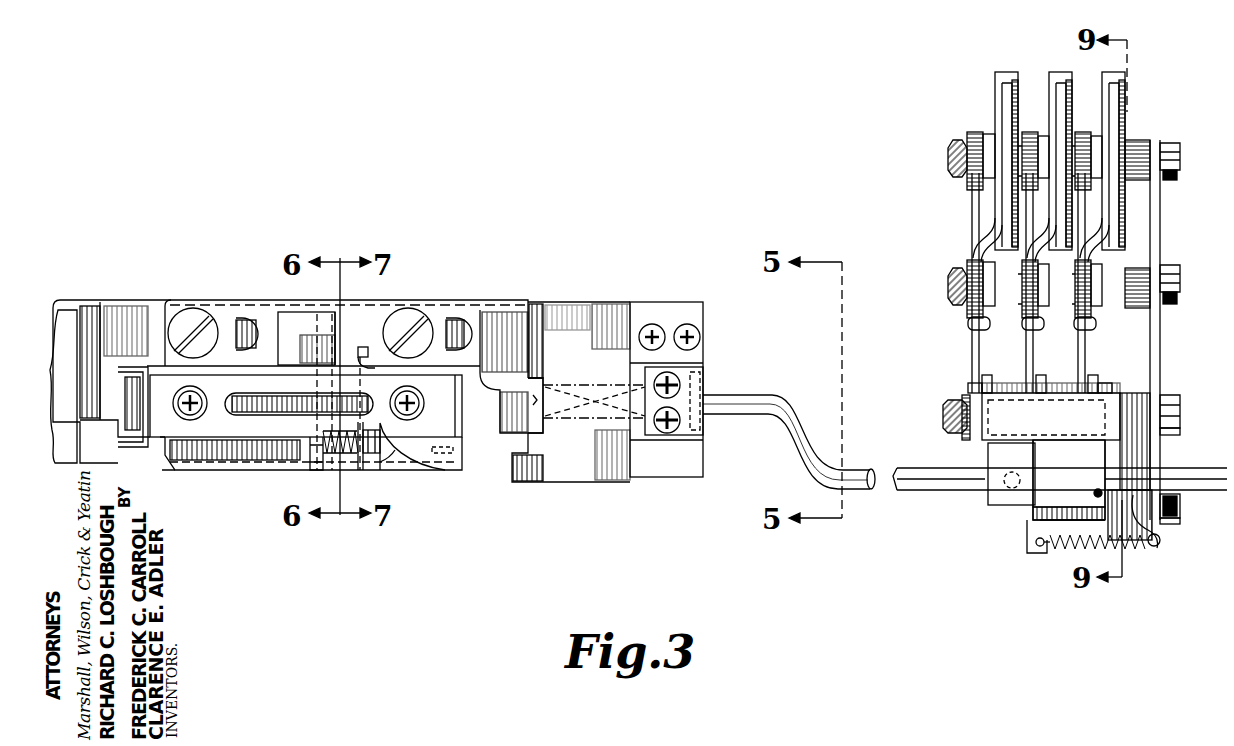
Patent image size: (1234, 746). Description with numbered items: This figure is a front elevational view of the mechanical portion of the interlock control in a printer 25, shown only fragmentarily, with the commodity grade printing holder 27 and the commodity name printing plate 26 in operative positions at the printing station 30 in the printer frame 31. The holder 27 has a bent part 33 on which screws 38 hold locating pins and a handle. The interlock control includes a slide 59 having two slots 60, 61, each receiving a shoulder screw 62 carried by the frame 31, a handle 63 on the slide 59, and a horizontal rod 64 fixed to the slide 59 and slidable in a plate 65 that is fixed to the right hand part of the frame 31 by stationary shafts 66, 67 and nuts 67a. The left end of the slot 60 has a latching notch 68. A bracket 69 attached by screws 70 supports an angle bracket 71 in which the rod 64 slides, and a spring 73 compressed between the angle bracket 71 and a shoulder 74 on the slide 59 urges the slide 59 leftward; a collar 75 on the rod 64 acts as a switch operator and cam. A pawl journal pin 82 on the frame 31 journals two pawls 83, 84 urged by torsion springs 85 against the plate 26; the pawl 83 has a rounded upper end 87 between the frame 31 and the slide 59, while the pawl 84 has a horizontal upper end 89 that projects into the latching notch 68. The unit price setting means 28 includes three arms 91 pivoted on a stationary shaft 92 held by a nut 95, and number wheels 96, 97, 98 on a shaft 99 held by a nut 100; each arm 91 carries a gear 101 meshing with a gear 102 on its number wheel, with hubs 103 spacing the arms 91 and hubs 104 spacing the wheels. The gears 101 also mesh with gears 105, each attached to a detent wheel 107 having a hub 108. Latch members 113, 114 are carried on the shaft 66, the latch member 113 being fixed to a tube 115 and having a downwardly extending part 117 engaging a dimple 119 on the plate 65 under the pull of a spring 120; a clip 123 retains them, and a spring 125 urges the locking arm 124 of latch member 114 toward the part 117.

The printer 25 is at (454, 494).
The commodity name printing plate 26 is at (446, 473).
The grade printing holder 27 is at (207, 472).
The unit price setting means 28 is at (926, 140).
The printing station 30 is at (306, 490).
The printer frame 31 is at (108, 301).
The bent part 33 is at (185, 452).
The screws 38 is at (196, 410).
The slide 59 is at (538, 336).
The slot 60 is at (453, 331).
The slot 61 is at (233, 332).
The shoulder screw 62 is at (177, 332).
The handle 63 is at (337, 319).
The rod 64 is at (768, 416).
The plate 65 is at (1151, 396).
The stationary shaft 66 is at (946, 416).
The stationary shaft 67 is at (1181, 501).
The nuts 67a is at (1182, 434).
The latching notch 68 is at (362, 360).
The bracket 69 is at (705, 310).
The screws 70 is at (689, 323).
The angle bracket 71 is at (665, 436).
The spring 73 is at (586, 420).
The shoulder 74 is at (540, 381).
The collar 75 is at (988, 501).
The pawl journal pin 82 is at (454, 450).
The pawl 83 is at (315, 466).
The pawl 84 is at (357, 466).
The torsion springs 85 is at (336, 466).
The rounded upper end 87 is at (313, 338).
The upper end 89 is at (360, 346).
The arms 91 is at (1008, 113).
The stationary shaft 92 is at (1180, 297).
The nut 95 is at (1182, 276).
The left hand number wheel 96 is at (1008, 73).
The middle number wheel 97 is at (1060, 73).
The right hand number wheel 98 is at (1113, 74).
The shaft 99 is at (1184, 165).
The nut 100 is at (1170, 148).
The gear 101 is at (965, 218).
The gear 102 is at (975, 136).
The hubs 103 is at (1000, 276).
The hubs 104 is at (990, 131).
The gears 105 is at (1072, 386).
The detent wheel 107 is at (978, 386).
The hub 108 is at (1003, 384).
The latch member 113 is at (1035, 554).
The latch member 114 is at (1050, 513).
The tube 115 is at (1100, 441).
The downwardly extending part 117 is at (1156, 547).
The dimple 119 is at (1161, 540).
The spring 120 is at (1130, 541).
The clip 123 is at (962, 431).
The locking arm 124 is at (1040, 529).
The spring 125 is at (1096, 492).